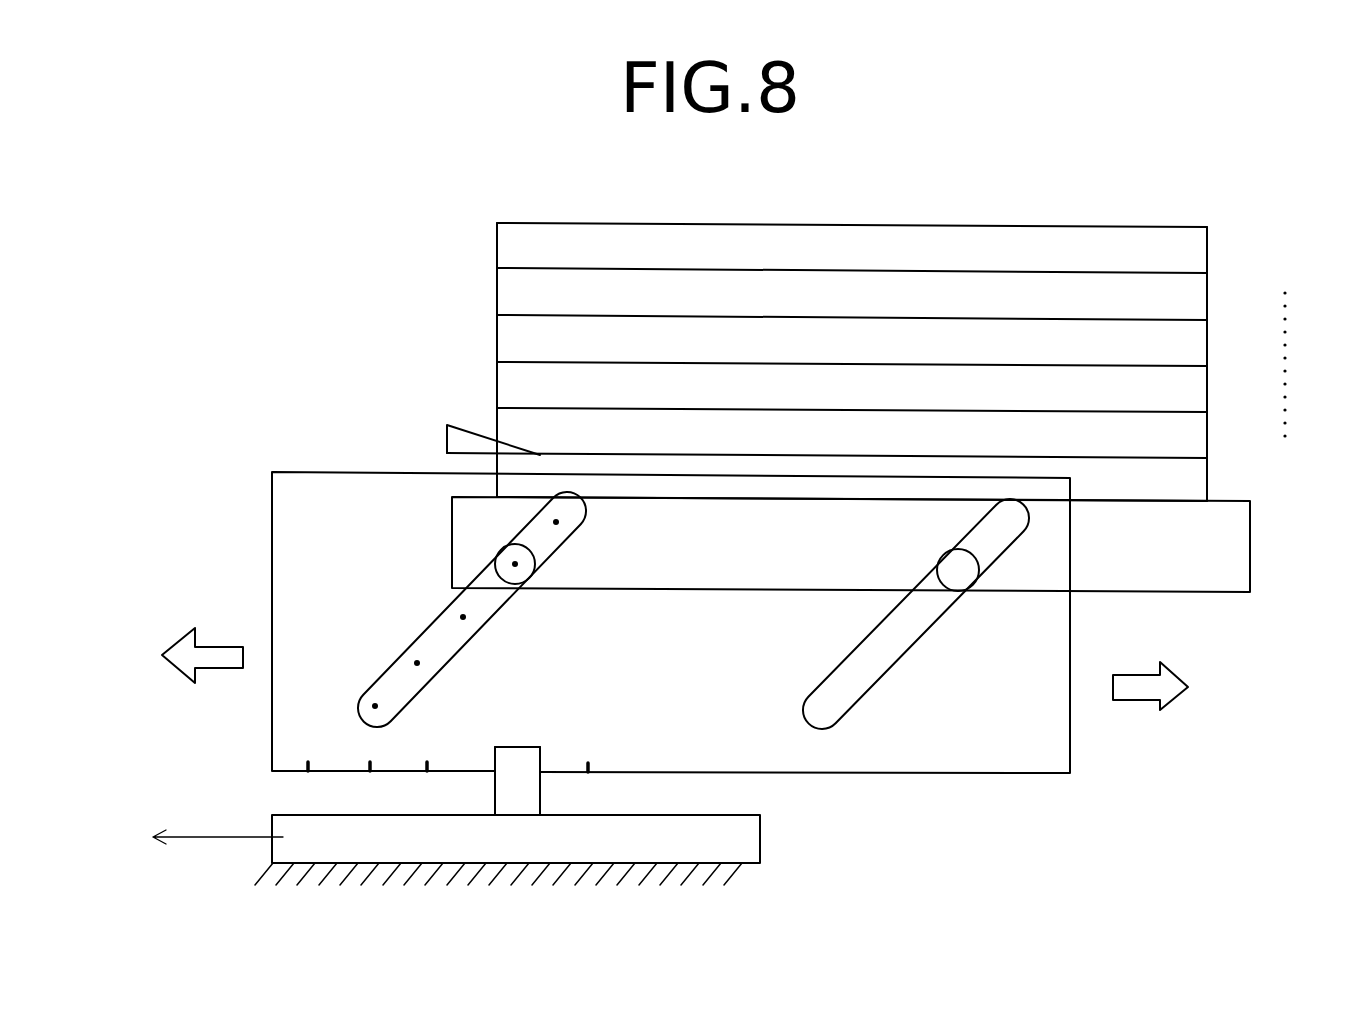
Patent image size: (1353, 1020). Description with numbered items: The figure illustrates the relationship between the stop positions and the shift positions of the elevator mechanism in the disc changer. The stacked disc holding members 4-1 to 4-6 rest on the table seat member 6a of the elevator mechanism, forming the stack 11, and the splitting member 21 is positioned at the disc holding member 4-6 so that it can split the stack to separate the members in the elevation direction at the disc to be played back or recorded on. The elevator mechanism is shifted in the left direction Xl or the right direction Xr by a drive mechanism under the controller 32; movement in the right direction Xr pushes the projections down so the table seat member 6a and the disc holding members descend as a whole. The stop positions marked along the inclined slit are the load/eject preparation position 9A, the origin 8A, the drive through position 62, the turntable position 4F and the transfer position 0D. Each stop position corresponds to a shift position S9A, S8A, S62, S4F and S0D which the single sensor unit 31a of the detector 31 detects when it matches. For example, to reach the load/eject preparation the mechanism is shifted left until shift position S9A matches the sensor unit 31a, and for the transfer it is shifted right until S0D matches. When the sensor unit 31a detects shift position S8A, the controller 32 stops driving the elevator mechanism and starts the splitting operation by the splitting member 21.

The stack of recording media / trays 11 is at (830, 362).
The disc holding member 4-1 is at (1207, 250).
The disc holding member 4-6 is at (1198, 480).
The splitting member 21 is at (462, 427).
The table seat member 6a is at (1250, 570).
The stop position 9A is at (556, 522).
The stop position 8A is at (515, 564).
The stop position 62 is at (463, 617).
The stop position 4F is at (417, 663).
The stop position 0D is at (375, 706).
The shift position S0D is at (310, 748).
The shift position S4F is at (369, 786).
The shift position S62 is at (433, 748).
The shift position S8A is at (521, 740).
The shift position S9A is at (596, 749).
The sensor unit 31a is at (540, 797).
The detector 31 is at (775, 843).
The controller 32 is at (180, 838).
The left direction Xl is at (219, 648).
The right direction Xr is at (1168, 672).